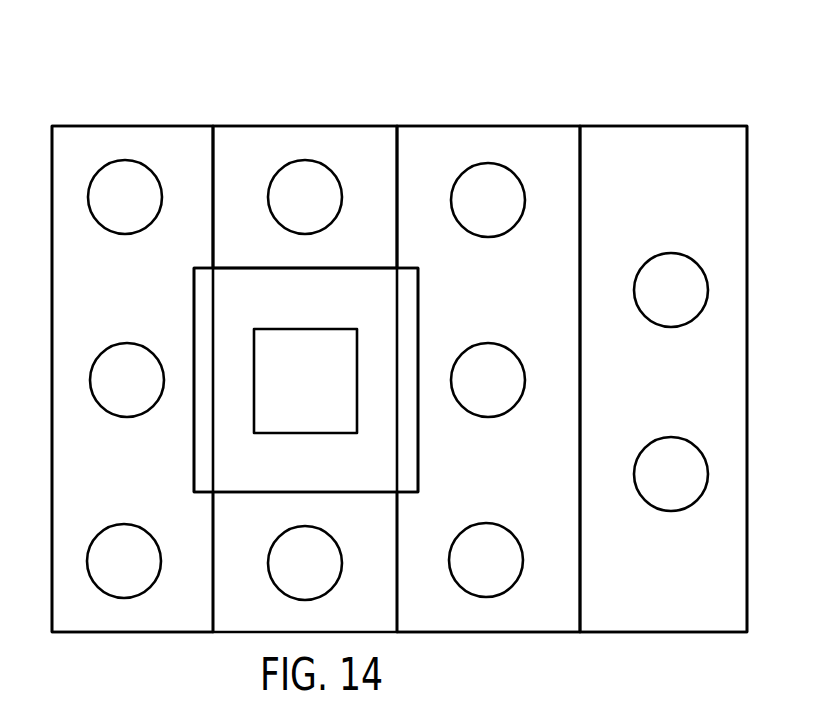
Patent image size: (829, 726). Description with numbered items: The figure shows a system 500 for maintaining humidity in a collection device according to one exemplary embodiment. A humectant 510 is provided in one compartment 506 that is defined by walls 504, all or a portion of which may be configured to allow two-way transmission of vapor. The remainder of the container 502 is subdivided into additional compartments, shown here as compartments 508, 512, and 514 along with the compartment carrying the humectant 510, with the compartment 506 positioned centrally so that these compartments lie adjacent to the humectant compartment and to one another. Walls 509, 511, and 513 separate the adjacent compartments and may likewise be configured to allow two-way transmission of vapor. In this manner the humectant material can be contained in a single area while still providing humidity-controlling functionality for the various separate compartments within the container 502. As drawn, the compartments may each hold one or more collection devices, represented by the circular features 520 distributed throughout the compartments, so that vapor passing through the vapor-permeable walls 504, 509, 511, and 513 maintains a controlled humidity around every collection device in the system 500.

The system 500 is at (652, 104).
The container 502 is at (341, 122).
The walls 504 is at (418, 408).
The compartment 506 is at (223, 295).
The compartment 508 is at (87, 140).
The wall 509 is at (213, 183).
The humectant 510 is at (309, 328).
The wall 511 is at (398, 167).
The compartment 512 is at (543, 143).
The wall 513 is at (582, 600).
The compartment 514 is at (730, 162).
The holes 520 is at (103, 229).